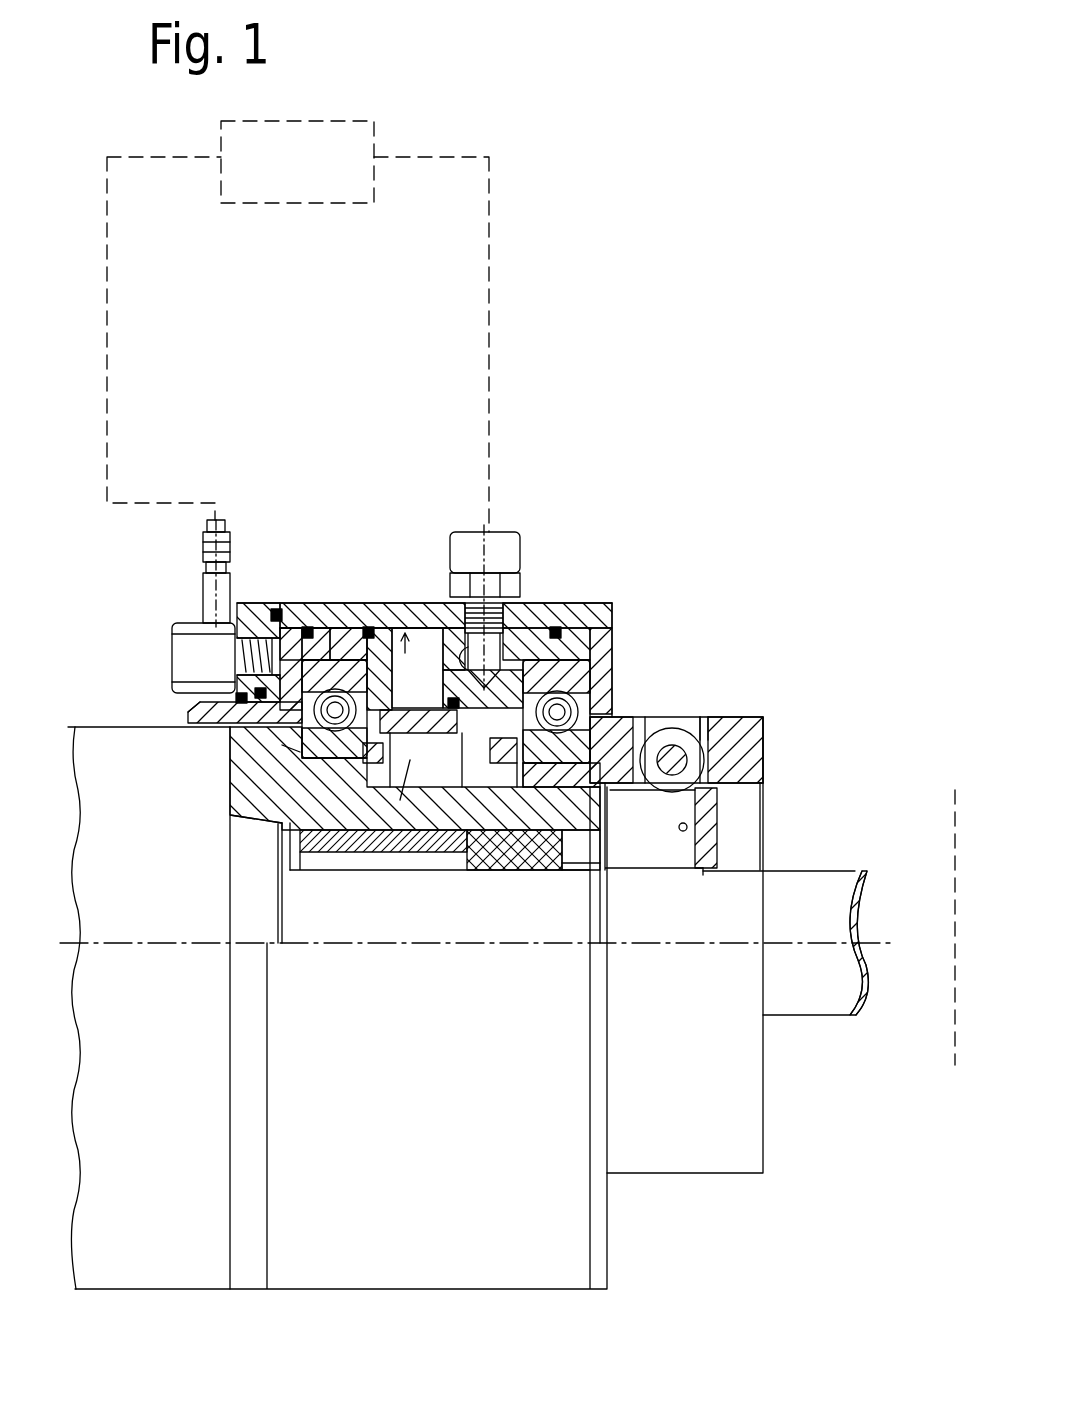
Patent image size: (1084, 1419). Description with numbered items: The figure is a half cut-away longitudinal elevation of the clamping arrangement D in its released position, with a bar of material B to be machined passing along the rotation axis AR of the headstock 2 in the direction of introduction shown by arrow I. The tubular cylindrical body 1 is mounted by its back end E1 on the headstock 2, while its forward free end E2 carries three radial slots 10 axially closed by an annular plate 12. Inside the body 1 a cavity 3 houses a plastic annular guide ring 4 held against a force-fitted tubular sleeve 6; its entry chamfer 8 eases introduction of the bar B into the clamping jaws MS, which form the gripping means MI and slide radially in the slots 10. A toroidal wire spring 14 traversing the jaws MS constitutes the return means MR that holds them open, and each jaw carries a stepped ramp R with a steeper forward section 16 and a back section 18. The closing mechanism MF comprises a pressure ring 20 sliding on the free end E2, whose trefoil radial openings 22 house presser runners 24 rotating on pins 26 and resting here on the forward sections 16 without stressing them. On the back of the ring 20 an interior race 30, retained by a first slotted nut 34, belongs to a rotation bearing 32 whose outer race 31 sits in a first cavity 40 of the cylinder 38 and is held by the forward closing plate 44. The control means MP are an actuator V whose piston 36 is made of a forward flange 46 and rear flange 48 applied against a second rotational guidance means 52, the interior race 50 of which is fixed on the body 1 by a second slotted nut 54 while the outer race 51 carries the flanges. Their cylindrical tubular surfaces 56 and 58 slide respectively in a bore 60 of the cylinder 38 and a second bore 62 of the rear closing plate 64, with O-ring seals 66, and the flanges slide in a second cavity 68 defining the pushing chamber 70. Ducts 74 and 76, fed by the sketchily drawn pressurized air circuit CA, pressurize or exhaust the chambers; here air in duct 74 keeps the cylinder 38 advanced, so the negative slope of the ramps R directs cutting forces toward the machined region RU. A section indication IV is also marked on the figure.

The cylindrical body 1 is at (270, 797).
The headstock 2 is at (255, 918).
The cavity 3 is at (400, 830).
The annular guide ring 4 is at (520, 870).
The tubular sleeve 6 is at (318, 872).
The entry chamfer 8 is at (432, 840).
The radial slots 10 is at (582, 866).
The annular plate 12 is at (707, 877).
The wire spring 14 is at (692, 826).
The forward section 16 is at (775, 735).
The back section 18 is at (707, 717).
The pressure ring 20 is at (750, 760).
The radial openings 22 is at (644, 717).
The presser runners 24 is at (703, 717).
The pins 26 is at (688, 887).
The interior race 30 is at (560, 832).
The outer race 31 is at (600, 590).
The rotation bearing 32 is at (592, 600).
The first slotted nut 34 is at (490, 855).
The piston 36 is at (438, 489).
The cylinder 38 is at (305, 603).
The first cavity 40 is at (612, 660).
The forward closing plate 44 is at (612, 612).
The forward flange 46 is at (351, 603).
The rear flange 48 is at (314, 603).
The interior race 50 is at (279, 753).
The outer race 51 is at (330, 628).
The second rotational guidance means 52 is at (233, 758).
The second slotted nut 54 is at (273, 787).
The cylindrical tubular surface 56 is at (360, 852).
The cylindrical tubular surface 58 is at (207, 712).
The bore 60 is at (410, 790).
The second bore 62 is at (190, 723).
The rear closing plate 64 is at (246, 603).
The seals 66 is at (276, 609).
The second cavity 68 is at (430, 640).
The pushing chamber 70 is at (462, 640).
The duct 74 is at (505, 620).
The duct 76 is at (205, 553).
The pressurized air circuit CA is at (351, 140).
The control means MP is at (422, 420).
The actuator V is at (396, 262).
The clamping arrangement D is at (743, 520).
The closing mechanism MF is at (798, 613).
The ramp R is at (893, 607).
The return means MR is at (700, 814).
The bar of material B is at (797, 880).
The back end E1 is at (132, 772).
The free end E2 is at (700, 1000).
The clamping jaws MS is at (630, 913).
The gripping means MI is at (628, 1000).
The rotation axis AR is at (822, 1000).
The machined region RU is at (953, 1022).
The direction of introduction I is at (390, 1041).
The section line IV is at (887, 778).